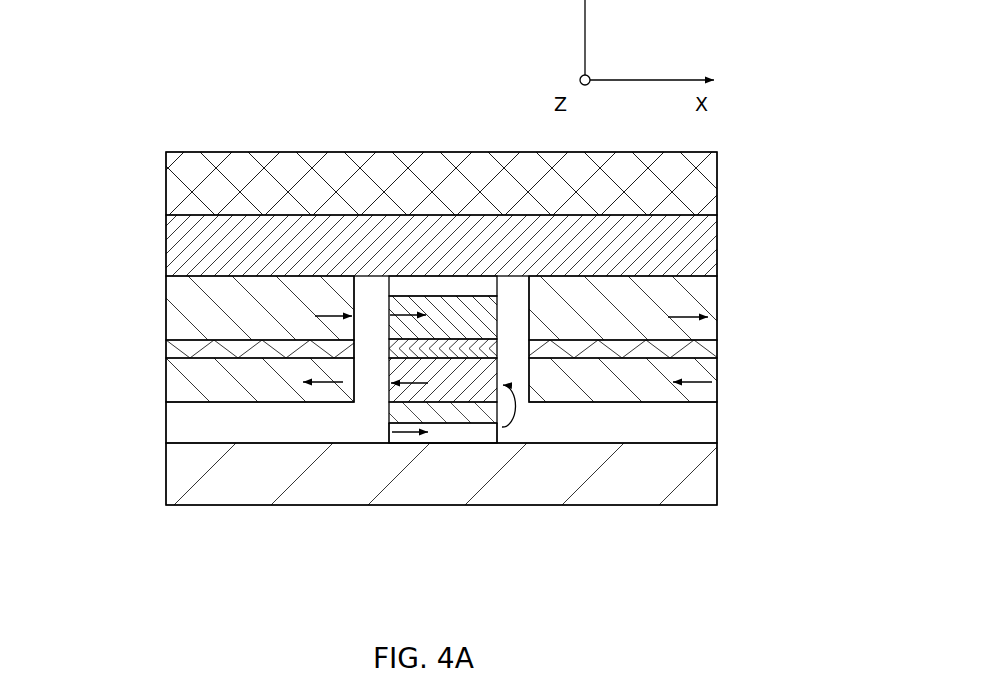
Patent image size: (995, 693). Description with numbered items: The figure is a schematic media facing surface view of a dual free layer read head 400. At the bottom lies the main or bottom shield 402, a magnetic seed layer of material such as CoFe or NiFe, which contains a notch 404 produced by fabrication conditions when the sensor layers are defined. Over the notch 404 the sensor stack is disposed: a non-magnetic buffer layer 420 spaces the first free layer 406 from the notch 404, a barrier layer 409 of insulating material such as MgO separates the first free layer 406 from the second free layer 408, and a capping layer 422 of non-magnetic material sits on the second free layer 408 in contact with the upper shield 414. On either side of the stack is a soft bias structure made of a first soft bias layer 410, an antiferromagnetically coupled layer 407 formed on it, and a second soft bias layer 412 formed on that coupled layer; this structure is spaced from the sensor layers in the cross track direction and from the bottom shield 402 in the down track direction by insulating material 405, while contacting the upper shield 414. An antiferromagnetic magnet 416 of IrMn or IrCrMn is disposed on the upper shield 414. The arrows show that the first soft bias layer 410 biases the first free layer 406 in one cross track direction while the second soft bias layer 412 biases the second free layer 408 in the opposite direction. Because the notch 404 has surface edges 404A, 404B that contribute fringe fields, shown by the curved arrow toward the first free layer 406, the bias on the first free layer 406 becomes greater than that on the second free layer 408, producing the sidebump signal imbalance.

The DFL read head 400 is at (112, 92).
The bottom shield 402 is at (519, 482).
The notch 404 is at (443, 437).
The surface edge of notch 404A is at (384, 435).
The surface edge of notch 404B is at (503, 436).
The insulating material 405 is at (280, 434).
The first free layer 406 is at (477, 391).
The antiferromagnetically coupled layer 407 is at (164, 350).
The second free layer 408 is at (490, 332).
The barrier layer 409 is at (389, 351).
The first soft bias layer 410 is at (279, 392).
The second soft bias layer 412 is at (283, 322).
The upper shield 414 is at (459, 259).
The antiferromagnetic magnet 416 is at (459, 192).
The non-magnetic buffer layer 420 is at (387, 416).
The capping layer 422 is at (388, 286).